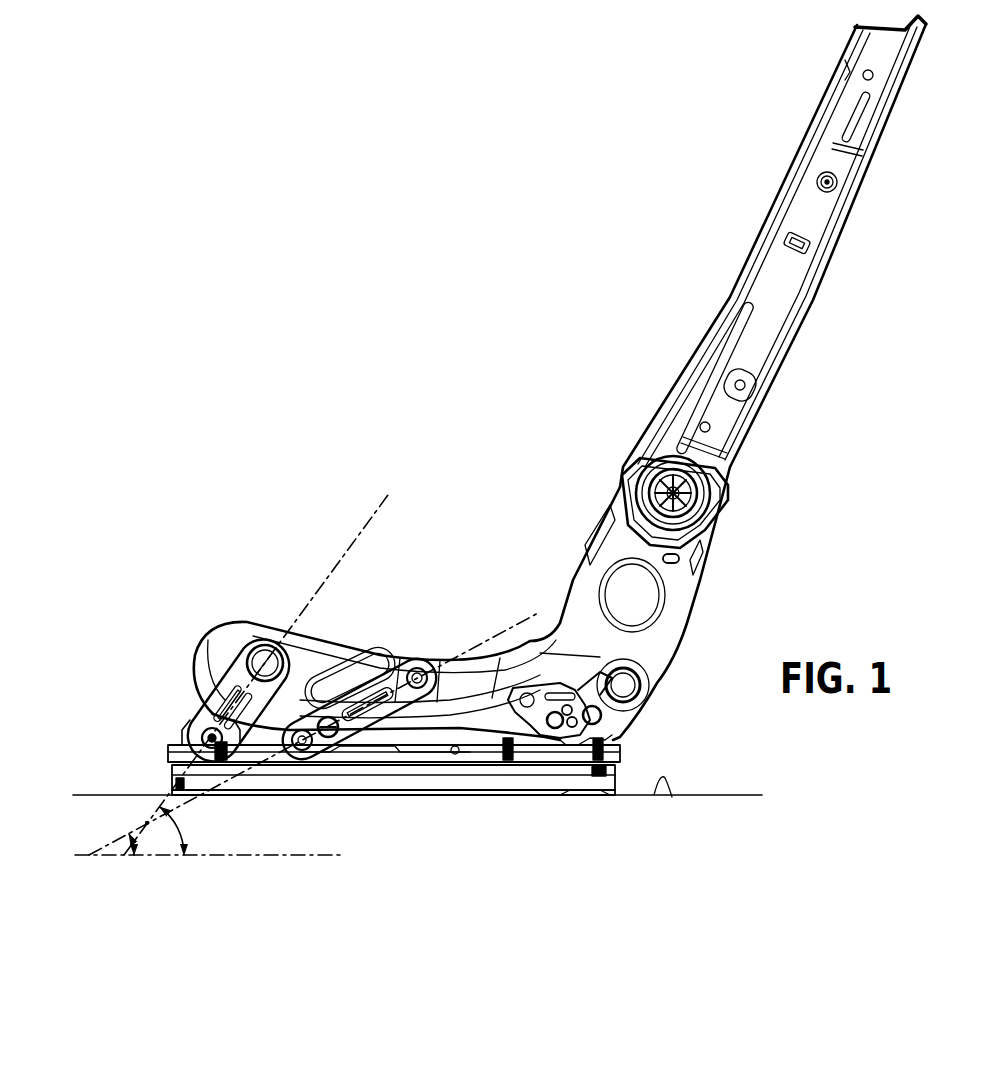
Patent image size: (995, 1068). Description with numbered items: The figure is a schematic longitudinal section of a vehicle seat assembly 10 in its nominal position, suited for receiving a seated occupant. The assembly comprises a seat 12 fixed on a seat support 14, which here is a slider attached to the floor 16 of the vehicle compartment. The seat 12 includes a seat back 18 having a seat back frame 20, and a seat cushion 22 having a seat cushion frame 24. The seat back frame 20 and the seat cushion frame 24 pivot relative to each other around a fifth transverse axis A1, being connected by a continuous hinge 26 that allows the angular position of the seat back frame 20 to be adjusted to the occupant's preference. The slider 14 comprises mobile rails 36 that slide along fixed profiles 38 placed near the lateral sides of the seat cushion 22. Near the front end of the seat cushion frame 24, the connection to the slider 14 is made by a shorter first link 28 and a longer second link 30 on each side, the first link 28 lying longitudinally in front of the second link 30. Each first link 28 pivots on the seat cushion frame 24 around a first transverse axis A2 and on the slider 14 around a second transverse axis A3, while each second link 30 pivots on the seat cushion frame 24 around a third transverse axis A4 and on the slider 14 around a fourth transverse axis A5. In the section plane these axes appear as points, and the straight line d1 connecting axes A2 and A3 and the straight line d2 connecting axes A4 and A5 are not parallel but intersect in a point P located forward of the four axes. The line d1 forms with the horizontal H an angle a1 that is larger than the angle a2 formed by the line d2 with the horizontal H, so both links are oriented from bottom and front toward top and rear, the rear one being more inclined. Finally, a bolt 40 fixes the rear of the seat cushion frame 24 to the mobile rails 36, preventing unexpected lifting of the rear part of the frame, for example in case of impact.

The vehicle seat assembly 10 is at (380, 153).
The seat 12 is at (449, 360).
The seat support 14 is at (394, 824).
The floor 16 is at (669, 805).
The seat back 18 is at (712, 178).
The seat back frame 20 is at (697, 352).
The seat cushion 22 is at (292, 522).
The seat cushion frame 24 is at (284, 640).
The hinge 26 is at (614, 453).
The first link 28 is at (200, 732).
The second link 30 is at (398, 687).
The mobile rail 36 is at (393, 766).
The fixed profile 38 is at (433, 778).
The bolt 40 is at (632, 740).
The fifth transverse axis A1 is at (680, 493).
The first transverse axis A2 is at (262, 658).
The second transverse axis A3 is at (203, 738).
The third transverse axis A4 is at (418, 669).
The fourth transverse axis A5 is at (306, 751).
The straight line d1 is at (382, 498).
The straight line d2 is at (522, 620).
The horizontal H is at (284, 858).
The point P is at (149, 826).
The angle a1 is at (190, 840).
The angle a2 is at (130, 844).